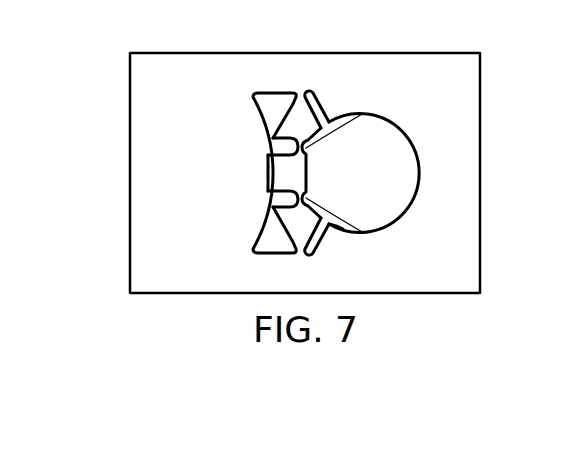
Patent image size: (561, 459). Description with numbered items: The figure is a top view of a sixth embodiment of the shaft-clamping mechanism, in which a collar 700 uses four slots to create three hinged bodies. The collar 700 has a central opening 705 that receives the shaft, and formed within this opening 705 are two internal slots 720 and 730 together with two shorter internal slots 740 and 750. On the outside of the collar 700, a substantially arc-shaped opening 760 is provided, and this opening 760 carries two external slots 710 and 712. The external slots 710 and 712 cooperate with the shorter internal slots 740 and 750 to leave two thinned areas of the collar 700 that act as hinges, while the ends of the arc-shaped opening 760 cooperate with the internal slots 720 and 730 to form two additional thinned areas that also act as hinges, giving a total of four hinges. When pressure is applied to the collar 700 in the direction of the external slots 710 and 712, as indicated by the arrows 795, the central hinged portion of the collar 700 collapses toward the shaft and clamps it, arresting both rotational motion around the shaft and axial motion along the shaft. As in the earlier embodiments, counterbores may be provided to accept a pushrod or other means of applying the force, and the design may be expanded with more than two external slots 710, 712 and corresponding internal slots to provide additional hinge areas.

The collar 700 is at (192, 53).
The opening 705 is at (383, 174).
The external slot 710 is at (268, 198).
The external slot 712 is at (283, 148).
The internal slot 720 is at (308, 253).
The internal slot 730 is at (310, 92).
The shorter internal slot 740 is at (343, 226).
The shorter internal slot 750 is at (358, 118).
The opening 760 is at (257, 92).
The arrows 795 is at (258, 170).